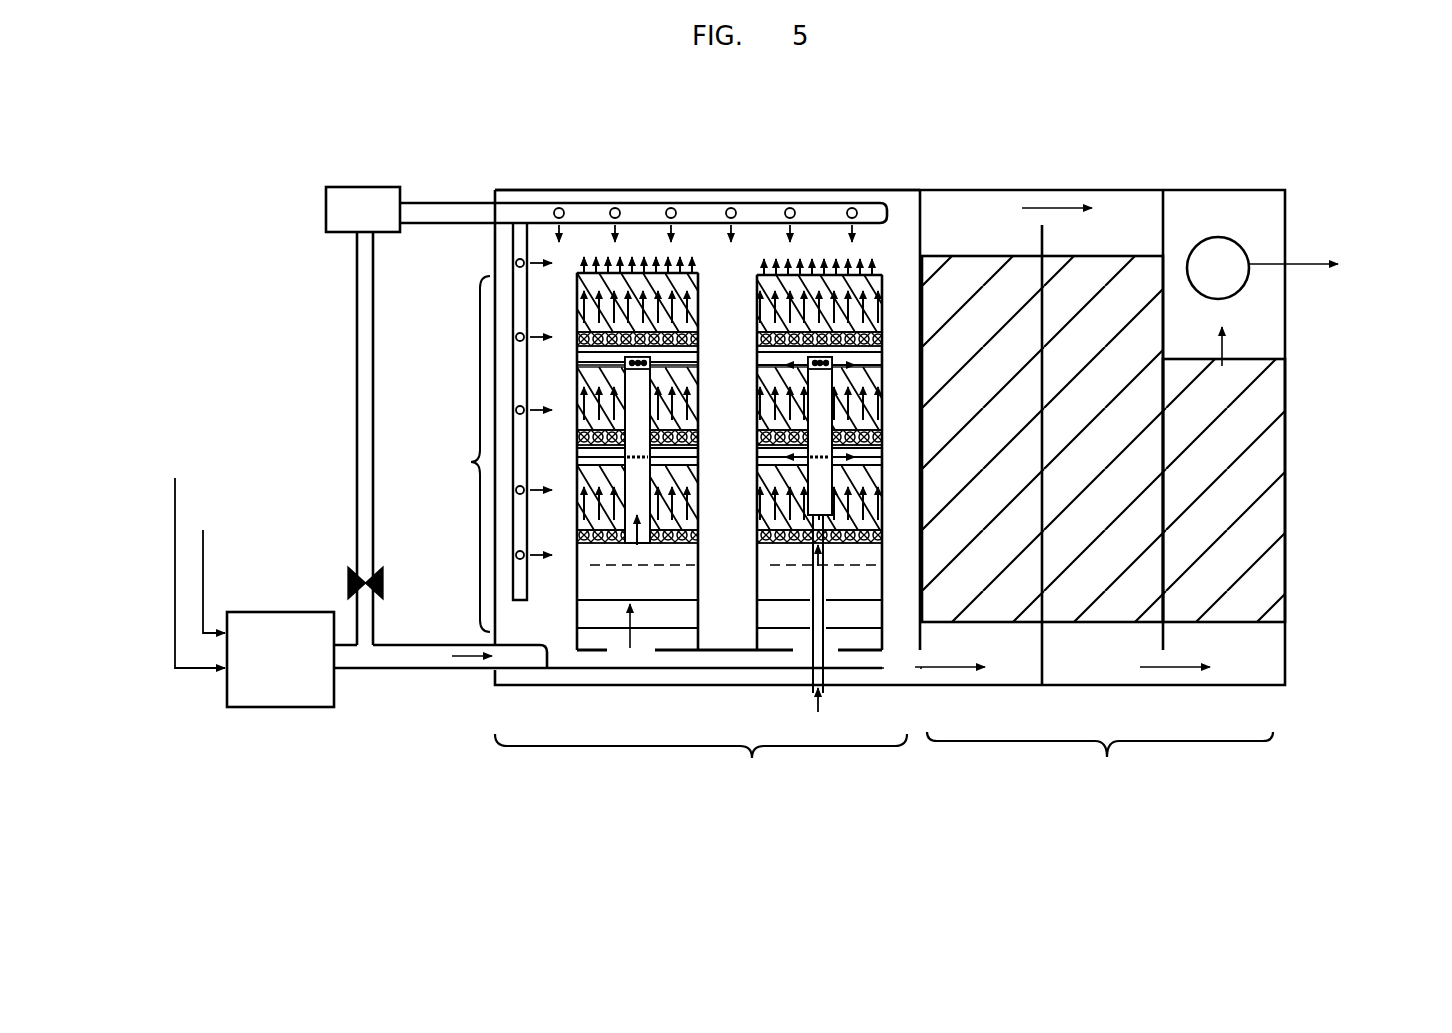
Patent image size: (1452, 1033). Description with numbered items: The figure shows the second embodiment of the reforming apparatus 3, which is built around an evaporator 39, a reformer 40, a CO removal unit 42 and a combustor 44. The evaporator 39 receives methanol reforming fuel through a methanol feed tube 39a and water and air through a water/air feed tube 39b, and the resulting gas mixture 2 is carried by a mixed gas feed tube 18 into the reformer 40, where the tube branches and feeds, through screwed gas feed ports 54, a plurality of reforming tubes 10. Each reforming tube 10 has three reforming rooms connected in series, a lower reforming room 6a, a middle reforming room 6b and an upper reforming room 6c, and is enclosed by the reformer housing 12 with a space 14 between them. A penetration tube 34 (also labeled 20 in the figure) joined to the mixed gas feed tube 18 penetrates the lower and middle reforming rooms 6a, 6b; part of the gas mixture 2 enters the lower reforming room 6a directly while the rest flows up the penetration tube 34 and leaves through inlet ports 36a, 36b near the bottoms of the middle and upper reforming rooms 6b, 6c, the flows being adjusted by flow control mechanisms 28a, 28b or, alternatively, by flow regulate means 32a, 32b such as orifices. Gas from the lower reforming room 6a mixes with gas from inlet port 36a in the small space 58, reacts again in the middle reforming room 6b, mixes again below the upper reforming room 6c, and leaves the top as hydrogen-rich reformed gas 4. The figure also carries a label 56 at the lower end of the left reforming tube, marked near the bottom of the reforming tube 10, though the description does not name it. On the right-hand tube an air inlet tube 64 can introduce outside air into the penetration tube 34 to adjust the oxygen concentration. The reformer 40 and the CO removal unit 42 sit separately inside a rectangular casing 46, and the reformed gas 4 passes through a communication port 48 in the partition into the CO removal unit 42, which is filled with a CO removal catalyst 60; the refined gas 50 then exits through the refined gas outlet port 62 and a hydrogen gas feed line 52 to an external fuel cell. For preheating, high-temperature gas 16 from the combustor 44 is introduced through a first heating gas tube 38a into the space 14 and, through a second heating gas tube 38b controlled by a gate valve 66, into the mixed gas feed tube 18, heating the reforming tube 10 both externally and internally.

The reforming apparatus 3 is at (340, 90).
The gas mixture 2 is at (460, 652).
The reformed gas 4 is at (577, 268).
The lower reforming room 6a is at (865, 505).
The middle reforming room 6b is at (865, 412).
The upper reforming room 6c is at (865, 309).
The reforming tube 10 is at (473, 427).
The reformer housing 12 is at (722, 190).
The space 14 is at (893, 235).
The high-temperature gas 16 is at (488, 211).
The mixed gas feed tube 18 is at (750, 667).
The air passage 20 is at (692, 536).
The flow control mechanism 28a is at (650, 457).
The flow control mechanism 28b is at (650, 362).
The flow regulate means 32a is at (673, 477).
The flow regulate means 32b is at (673, 383).
The penetration tube 34 is at (690, 508).
The inlet port 36a is at (577, 458).
The inlet port 36b is at (577, 362).
The first heating gas tube 38a is at (578, 212).
The second heating gas tube 38b is at (374, 382).
The evaporator 39 is at (289, 708).
The methanol feed tube 39a is at (203, 589).
The water/air feed tube 39b is at (177, 670).
The reformer 40 is at (701, 765).
The CO removal unit 42 is at (1100, 491).
The combustor 44 is at (357, 187).
The rectangular casing 46 is at (982, 188).
The communication port 48 is at (908, 670).
The refined gas 50 is at (1245, 346).
The hydrogen gas feed line 52 is at (1318, 258).
The gas feed port 54 is at (637, 654).
The liquid level 56 is at (592, 548).
The small space 58 is at (866, 458).
The CO removal catalyst 60 is at (1245, 558).
The refined gas outlet port 62 is at (1240, 242).
The air inlet tube 64 is at (813, 590).
The gate valve 66 is at (348, 583).